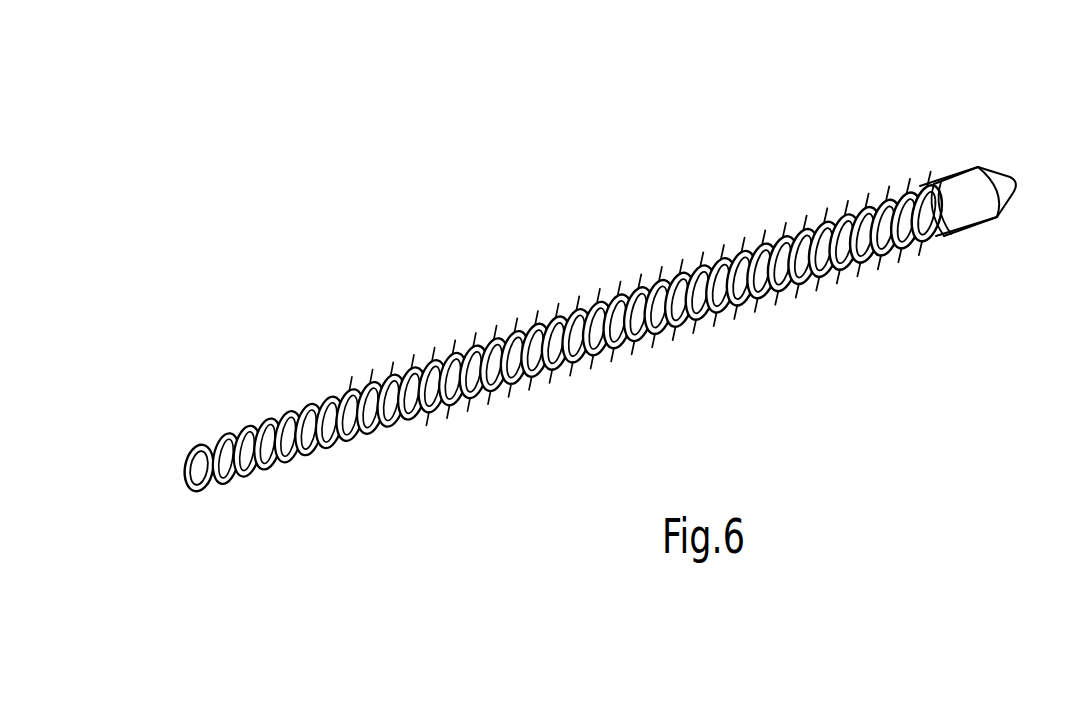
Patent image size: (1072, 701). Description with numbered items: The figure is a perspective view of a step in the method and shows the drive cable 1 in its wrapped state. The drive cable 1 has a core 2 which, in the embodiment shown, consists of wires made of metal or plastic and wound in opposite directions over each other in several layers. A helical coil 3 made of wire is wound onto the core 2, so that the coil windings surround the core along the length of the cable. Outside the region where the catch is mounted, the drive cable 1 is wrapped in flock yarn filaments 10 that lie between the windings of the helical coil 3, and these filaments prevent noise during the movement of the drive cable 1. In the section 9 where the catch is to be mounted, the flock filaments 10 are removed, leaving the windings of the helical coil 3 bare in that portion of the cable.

The drive cable 1 is at (601, 321).
The core 2 is at (564, 384).
The helical coil 3 is at (564, 398).
The section 9 is at (282, 478).
The flock yarn filaments 10 is at (566, 302).